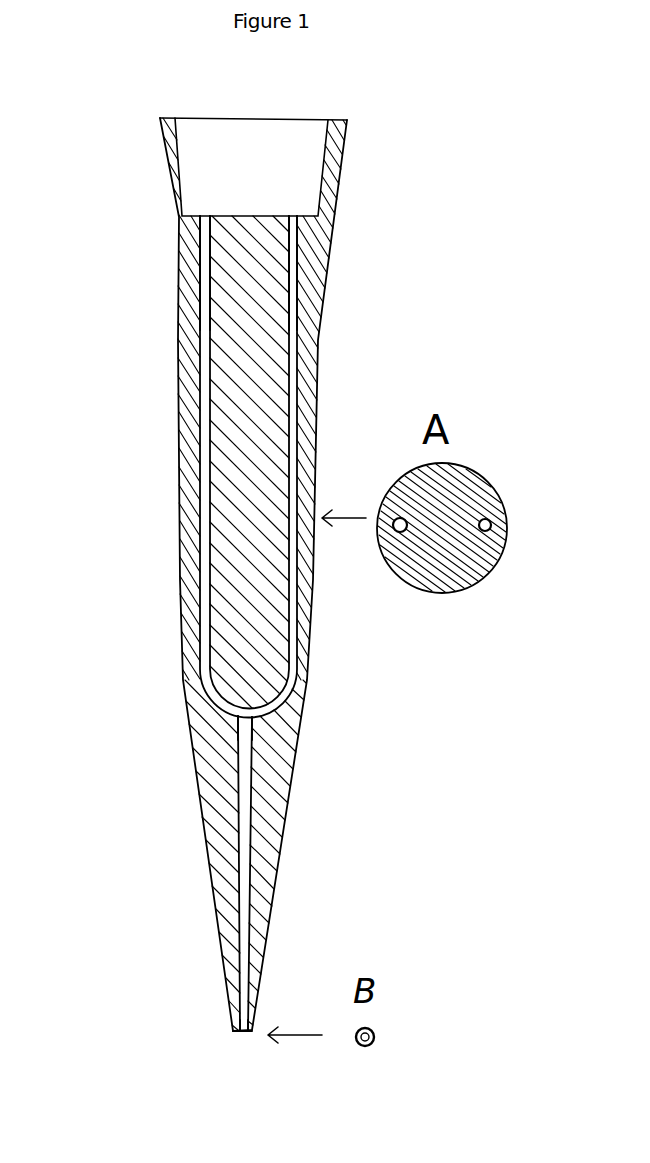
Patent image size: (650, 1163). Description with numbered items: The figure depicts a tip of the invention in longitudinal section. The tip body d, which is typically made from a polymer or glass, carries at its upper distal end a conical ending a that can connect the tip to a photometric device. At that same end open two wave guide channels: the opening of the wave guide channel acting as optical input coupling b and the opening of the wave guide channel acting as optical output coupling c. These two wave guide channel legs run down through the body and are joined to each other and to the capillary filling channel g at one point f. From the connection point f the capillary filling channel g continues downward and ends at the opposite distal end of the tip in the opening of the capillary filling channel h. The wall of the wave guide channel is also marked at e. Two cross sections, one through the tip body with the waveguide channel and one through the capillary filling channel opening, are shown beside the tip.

The conical ending a is at (170, 143).
The wave guide channel opening acting as optical input coupling b is at (293, 214).
The wave guide channel opening acting as optical output coupling c is at (207, 215).
The tip body d is at (250, 360).
The U-shaped channel e is at (203, 430).
The connection point f is at (245, 718).
The capillary filling channel g is at (243, 867).
The opening of the capillary filling channel h is at (233, 1031).